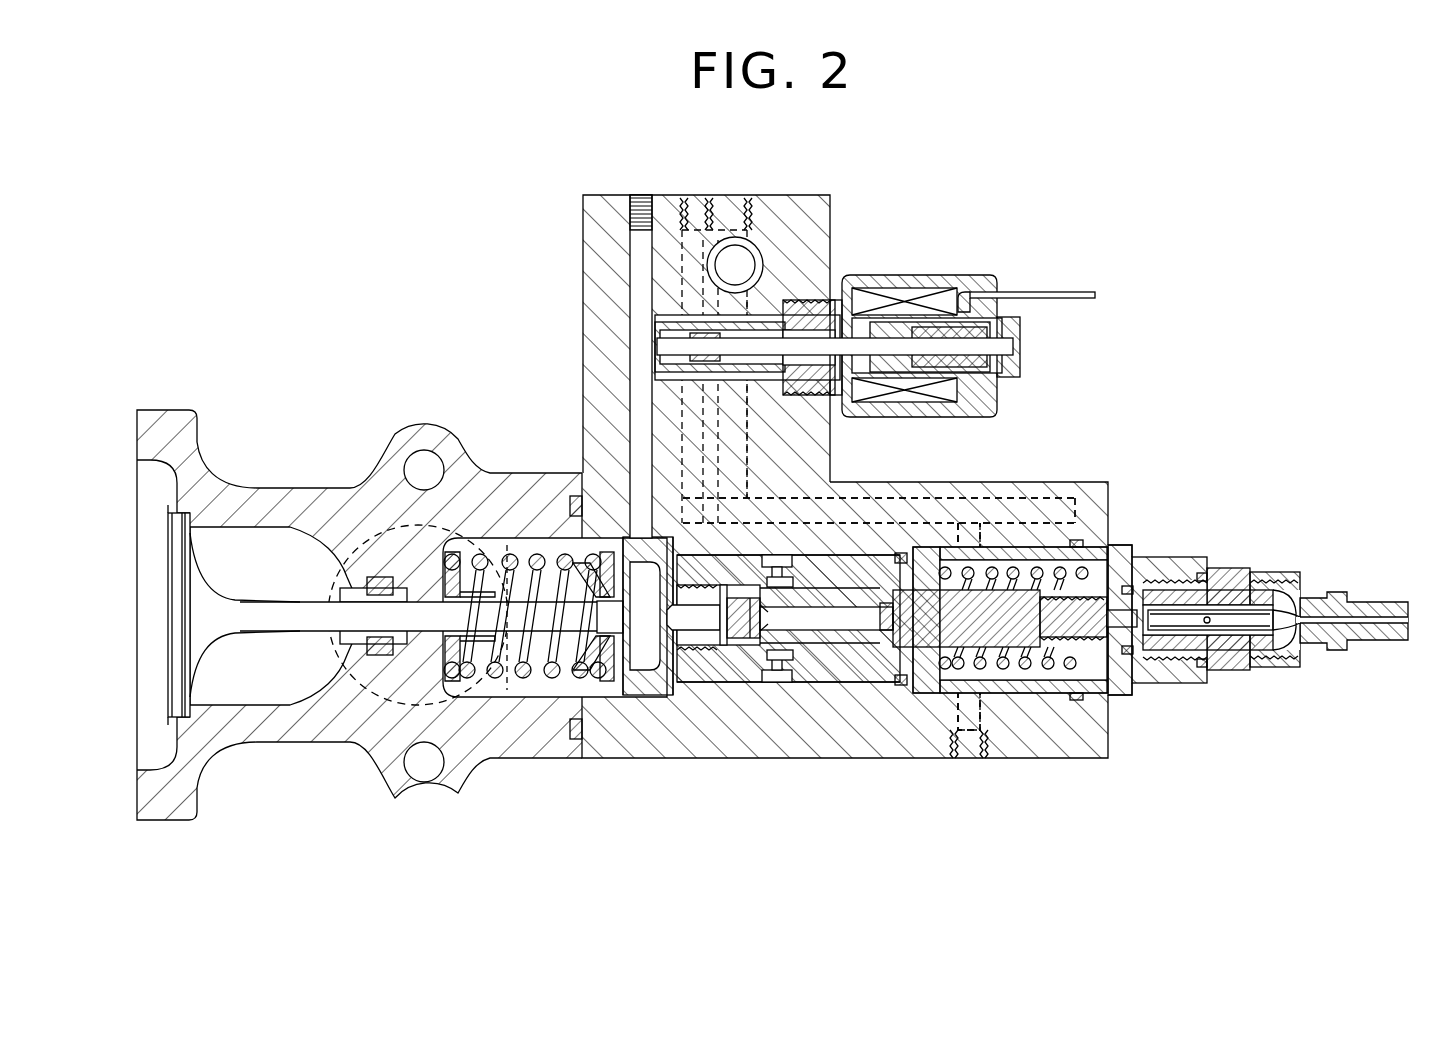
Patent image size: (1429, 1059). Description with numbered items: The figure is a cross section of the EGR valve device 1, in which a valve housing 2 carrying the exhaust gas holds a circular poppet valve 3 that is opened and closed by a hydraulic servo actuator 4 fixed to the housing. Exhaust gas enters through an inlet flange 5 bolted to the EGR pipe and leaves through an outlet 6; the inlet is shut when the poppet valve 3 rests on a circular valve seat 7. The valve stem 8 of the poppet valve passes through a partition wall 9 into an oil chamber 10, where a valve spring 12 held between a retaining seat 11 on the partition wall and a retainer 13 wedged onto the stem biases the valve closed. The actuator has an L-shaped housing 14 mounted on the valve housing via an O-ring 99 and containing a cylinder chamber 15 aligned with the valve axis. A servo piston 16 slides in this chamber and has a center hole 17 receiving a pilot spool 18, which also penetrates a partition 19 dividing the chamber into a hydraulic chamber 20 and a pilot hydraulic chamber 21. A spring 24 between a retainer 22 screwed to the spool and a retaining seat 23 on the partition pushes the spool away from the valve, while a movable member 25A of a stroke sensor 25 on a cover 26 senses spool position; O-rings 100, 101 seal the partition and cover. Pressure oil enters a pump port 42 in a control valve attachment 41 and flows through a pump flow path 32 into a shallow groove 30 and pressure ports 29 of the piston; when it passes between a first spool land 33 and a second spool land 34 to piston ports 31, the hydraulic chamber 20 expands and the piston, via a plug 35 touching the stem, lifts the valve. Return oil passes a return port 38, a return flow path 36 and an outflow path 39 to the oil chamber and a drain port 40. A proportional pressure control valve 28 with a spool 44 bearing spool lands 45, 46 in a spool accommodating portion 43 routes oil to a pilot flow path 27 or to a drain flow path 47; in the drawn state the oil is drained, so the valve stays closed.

The EGR valve device 1 is at (756, 507).
The valve housing 2 is at (300, 495).
The poppet valve 3 is at (168, 662).
The hydraulic servo actuator 4 is at (1019, 609).
The inlet flange 5 is at (160, 820).
The outlet 6 is at (330, 642).
The valve seat 7 is at (162, 705).
The valve stem 8 is at (305, 600).
The partition wall 9 is at (352, 580).
The oil chamber 10 is at (518, 537).
The retaining seat 11 is at (455, 692).
The valve spring 12 is at (542, 698).
The retainer 13 is at (600, 698).
The housing 14 is at (1060, 482).
The cylinder chamber 15 is at (800, 690).
The servo piston 16 is at (710, 690).
The center hole 17 is at (690, 690).
The pilot spool 18 is at (1005, 700).
The partition 19 is at (915, 700).
The hydraulic chamber 20 is at (900, 700).
The pilot hydraulic chamber 21 is at (1045, 700).
The retainer 22 is at (1112, 700).
The retaining seat 23 is at (960, 760).
The spring 24 is at (975, 700).
The stroke sensor 25 is at (1262, 575).
The movable member 25A is at (1140, 557).
The cover 26 is at (1160, 688).
The pilot flow path 27 is at (985, 512).
The proportional pressure control valve 28 is at (840, 330).
The pressure ports 29 is at (740, 690).
The shallow groove 30 is at (778, 690).
The piston ports 31 is at (905, 500).
The pump flow path 32 is at (760, 450).
The first spool land 33 is at (810, 505).
The second spool land 34 is at (790, 560).
The plug 35 is at (635, 565).
The return flow path 36 is at (835, 618).
The return port 38 is at (960, 618).
The outflow path 39 is at (640, 698).
The drain port 40 is at (605, 698).
The control valve attachment 41 is at (790, 200).
The pump port 42 is at (738, 250).
The spool accommodating portion 43 is at (775, 305).
The spool 44 is at (655, 347).
The first spool land 45 is at (660, 360).
The second spool land 46 is at (700, 368).
The drain flow path 47 is at (628, 290).
The O-ring 99 is at (576, 740).
The O-ring 100 is at (890, 760).
The O-ring 101 is at (1085, 760).